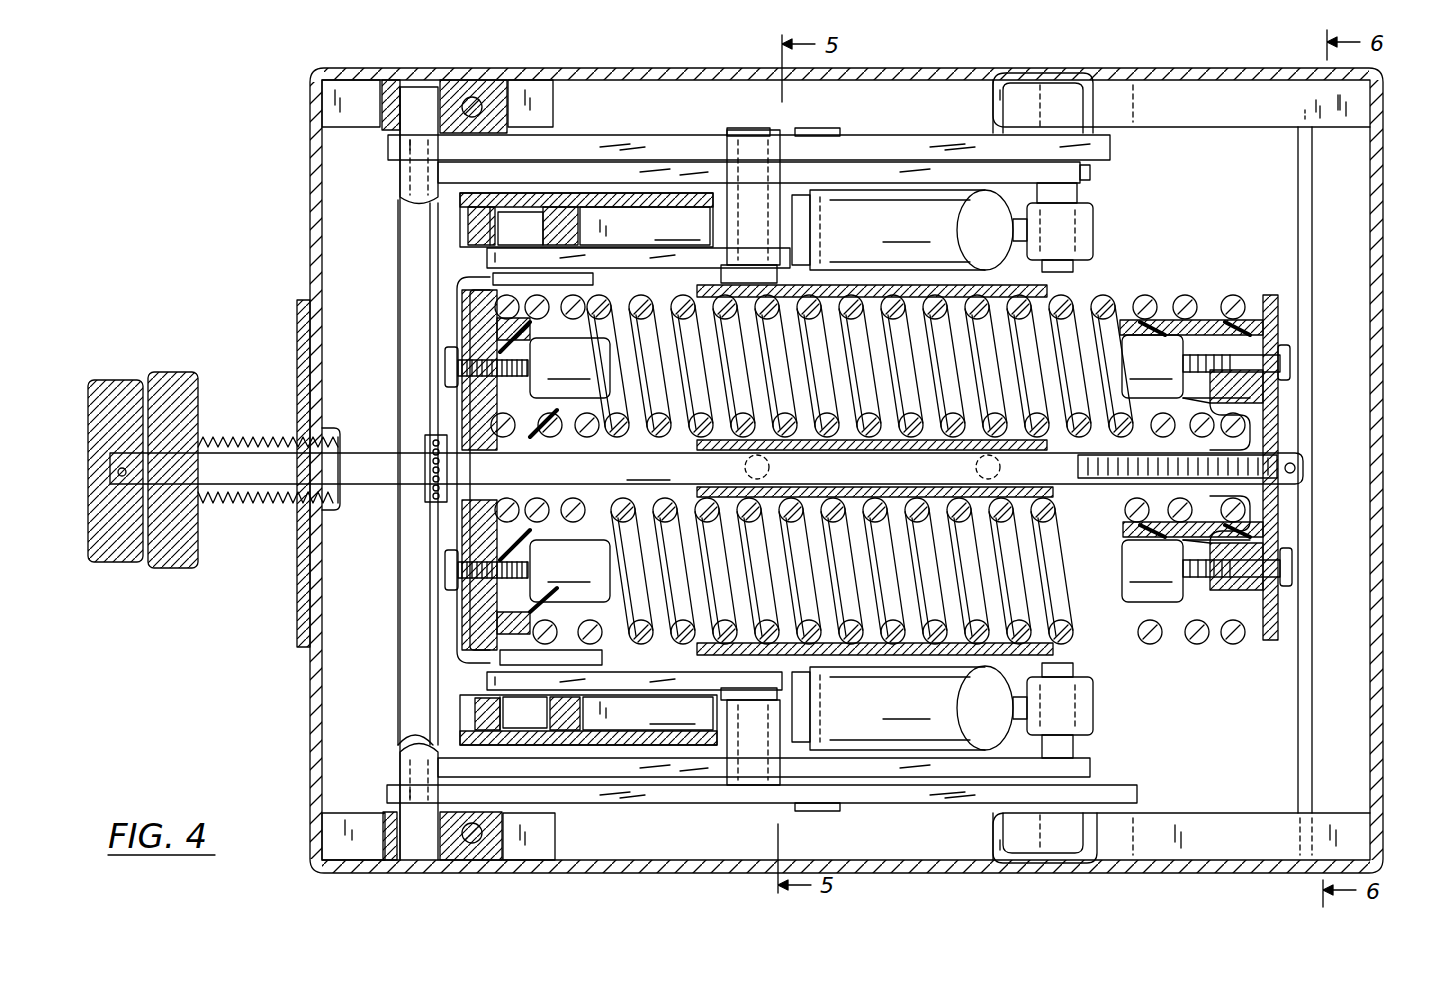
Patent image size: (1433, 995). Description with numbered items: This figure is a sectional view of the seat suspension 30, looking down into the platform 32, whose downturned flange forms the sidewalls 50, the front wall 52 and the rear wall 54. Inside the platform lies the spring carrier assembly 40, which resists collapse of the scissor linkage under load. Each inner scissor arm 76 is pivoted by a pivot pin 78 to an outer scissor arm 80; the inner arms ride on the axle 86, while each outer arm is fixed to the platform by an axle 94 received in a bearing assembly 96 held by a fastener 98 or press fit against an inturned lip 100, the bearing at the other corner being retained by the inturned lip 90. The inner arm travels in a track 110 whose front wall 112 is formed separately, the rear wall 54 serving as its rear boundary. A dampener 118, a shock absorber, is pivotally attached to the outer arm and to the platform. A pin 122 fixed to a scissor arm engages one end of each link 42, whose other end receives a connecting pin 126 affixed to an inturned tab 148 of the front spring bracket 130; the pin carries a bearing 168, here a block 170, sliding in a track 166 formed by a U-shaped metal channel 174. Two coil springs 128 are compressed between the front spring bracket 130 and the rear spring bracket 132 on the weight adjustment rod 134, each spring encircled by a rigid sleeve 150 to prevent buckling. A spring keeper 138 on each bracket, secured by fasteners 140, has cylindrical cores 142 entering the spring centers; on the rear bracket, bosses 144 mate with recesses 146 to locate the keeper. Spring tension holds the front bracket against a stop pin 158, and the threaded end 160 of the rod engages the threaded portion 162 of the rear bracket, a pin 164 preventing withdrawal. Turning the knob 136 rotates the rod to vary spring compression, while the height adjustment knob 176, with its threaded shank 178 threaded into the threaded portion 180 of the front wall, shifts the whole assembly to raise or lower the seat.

The seat suspension 30 is at (225, 180).
The platform 32 is at (312, 68).
The spring carrier assembly 40 is at (1182, 688).
The link 42 is at (485, 262).
The sidewall 50 is at (888, 68).
The front wall 52 is at (310, 220).
The rear wall 54 is at (1308, 170).
The inner scissor arm 76 is at (1090, 172).
The pivot pin 78 is at (820, 130).
The outer scissor arm 80 is at (915, 148).
The axle 86 is at (405, 606).
The inturned lip 90 is at (398, 840).
The axle 94 is at (410, 100).
The bearing assembly 96 is at (490, 95).
The fastener 98 is at (472, 97).
The inturned lip 100 is at (1180, 95).
The track 110 is at (1152, 95).
The front wall 112 is at (995, 90).
The dampener 118 is at (909, 470).
The pin 122 is at (738, 210).
The connecting pin 126 is at (508, 238).
The spring 128 is at (1108, 300).
The front spring bracket 130 is at (458, 304).
The rear spring bracket 132 is at (1273, 420).
The weight adjustment rod 134 is at (706, 468).
The knob 136 is at (110, 385).
The spring keeper 138 is at (1195, 322).
The fastener 140 is at (448, 355).
The core 142 is at (856, 468).
The boss 144 is at (1240, 345).
The recess 146 is at (1245, 545).
The inturned tab 148 is at (593, 280).
The sleeve 150 is at (1055, 288).
The pin 158 is at (425, 450).
The threaded end 160 is at (1263, 450).
The threaded portion 162 is at (1272, 497).
The pin 164 is at (1295, 467).
The track 166 is at (588, 469).
The bearing 168 is at (478, 220).
The block 170 is at (590, 225).
The U-shaped metal channel 174 is at (630, 200).
The height adjustment knob 176 is at (165, 372).
The threaded shank 178 is at (228, 437).
The threaded portion 180 is at (297, 346).